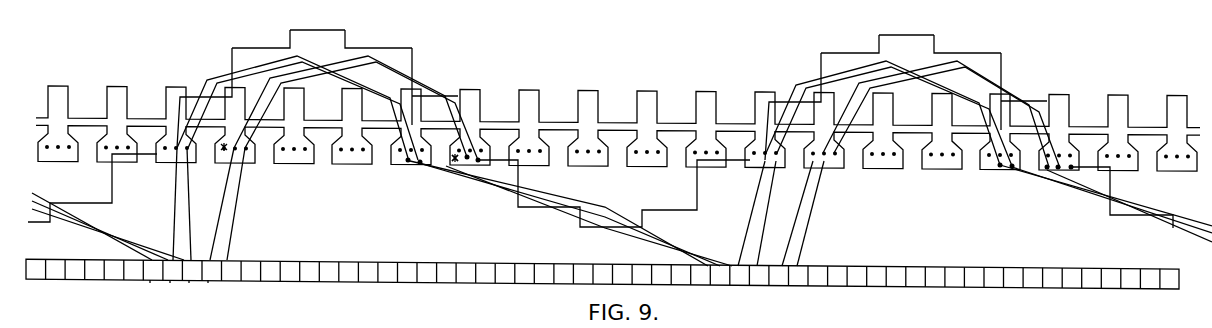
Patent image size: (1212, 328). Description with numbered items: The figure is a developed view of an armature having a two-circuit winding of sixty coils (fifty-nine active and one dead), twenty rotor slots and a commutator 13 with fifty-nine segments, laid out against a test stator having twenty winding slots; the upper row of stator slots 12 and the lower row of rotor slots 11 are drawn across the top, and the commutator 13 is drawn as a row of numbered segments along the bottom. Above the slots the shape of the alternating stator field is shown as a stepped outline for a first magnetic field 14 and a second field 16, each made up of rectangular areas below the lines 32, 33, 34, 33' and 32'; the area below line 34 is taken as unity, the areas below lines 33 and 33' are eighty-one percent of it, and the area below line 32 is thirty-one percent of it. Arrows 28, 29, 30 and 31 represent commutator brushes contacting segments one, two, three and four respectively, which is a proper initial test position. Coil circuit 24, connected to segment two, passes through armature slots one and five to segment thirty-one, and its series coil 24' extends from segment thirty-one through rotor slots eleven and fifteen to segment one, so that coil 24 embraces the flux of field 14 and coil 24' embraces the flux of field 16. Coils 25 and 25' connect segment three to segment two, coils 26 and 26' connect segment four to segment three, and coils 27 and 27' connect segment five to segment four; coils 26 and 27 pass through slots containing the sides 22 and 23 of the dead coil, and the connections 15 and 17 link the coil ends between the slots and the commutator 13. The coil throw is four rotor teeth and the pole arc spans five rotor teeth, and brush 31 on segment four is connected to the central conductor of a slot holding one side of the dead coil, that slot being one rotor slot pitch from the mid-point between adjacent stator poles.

The lower connector body row 11 is at (616, 163).
The upper connector tab row 12 is at (614, 100).
The commutator 13 is at (990, 267).
The magnetic field 14 is at (399, 52).
The jumper connection 15 is at (686, 202).
The field 16 is at (998, 63).
The jumper connection 17 is at (101, 192).
The dead coil side 22 is at (222, 182).
The dead coil side 23 is at (452, 160).
The coil circuit 24 is at (571, 213).
The coil 24' is at (622, 213).
The coil 25 is at (194, 204).
The coil 25' is at (622, 213).
The coil 26 is at (243, 204).
The coil 26' is at (622, 213).
The coil 27 is at (253, 204).
The coil 27' is at (635, 213).
The commutator brush 28 is at (150, 283).
The commutator brush 29 is at (170, 283).
The commutator brush 30 is at (189, 283).
The commutator brush 31 is at (208, 283).
The field area line 32 is at (499, 97).
The field area line 32' is at (739, 89).
The field area line 33 is at (555, 29).
The field area line 33' is at (673, 29).
The field area line 34 is at (318, 29).